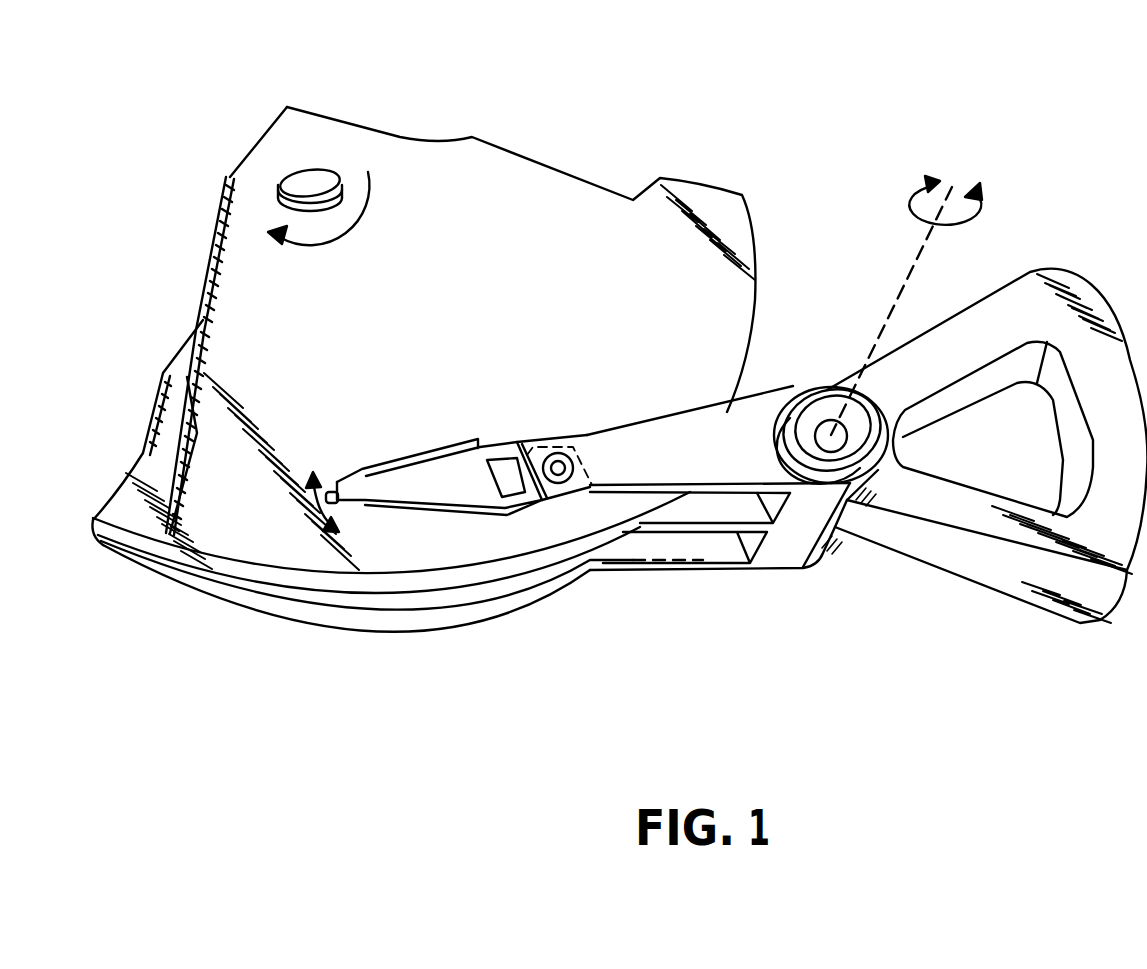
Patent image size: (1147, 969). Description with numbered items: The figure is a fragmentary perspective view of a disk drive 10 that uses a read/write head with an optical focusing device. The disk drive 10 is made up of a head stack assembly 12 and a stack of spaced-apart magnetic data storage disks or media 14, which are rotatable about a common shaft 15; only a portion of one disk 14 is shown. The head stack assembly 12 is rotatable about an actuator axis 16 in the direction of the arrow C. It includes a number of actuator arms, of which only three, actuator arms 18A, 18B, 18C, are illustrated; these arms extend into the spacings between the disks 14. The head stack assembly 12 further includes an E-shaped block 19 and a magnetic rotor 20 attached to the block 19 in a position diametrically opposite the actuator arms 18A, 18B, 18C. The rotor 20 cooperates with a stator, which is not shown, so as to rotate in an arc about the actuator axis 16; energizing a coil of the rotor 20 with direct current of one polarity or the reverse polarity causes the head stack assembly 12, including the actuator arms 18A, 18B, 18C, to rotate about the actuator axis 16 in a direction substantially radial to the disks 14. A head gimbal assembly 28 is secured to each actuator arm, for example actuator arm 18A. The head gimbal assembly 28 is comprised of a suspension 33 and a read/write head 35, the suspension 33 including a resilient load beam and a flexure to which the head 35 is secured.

The disk drive 10 is at (572, 66).
The head stack assembly 12 is at (798, 610).
The magnetic data storage disks 14 is at (504, 241).
The common shaft 15 is at (293, 182).
The actuator axis 16 is at (921, 252).
The actuator arm 18A is at (697, 402).
The actuator arm 18B is at (684, 518).
The actuator arm 18C is at (717, 568).
The E-shaped block 19 is at (806, 553).
The magnetic rotor 20 is at (973, 570).
The head gimbal assembly 28 is at (431, 430).
The suspension 33 is at (462, 498).
The read/write head 35 is at (328, 506).